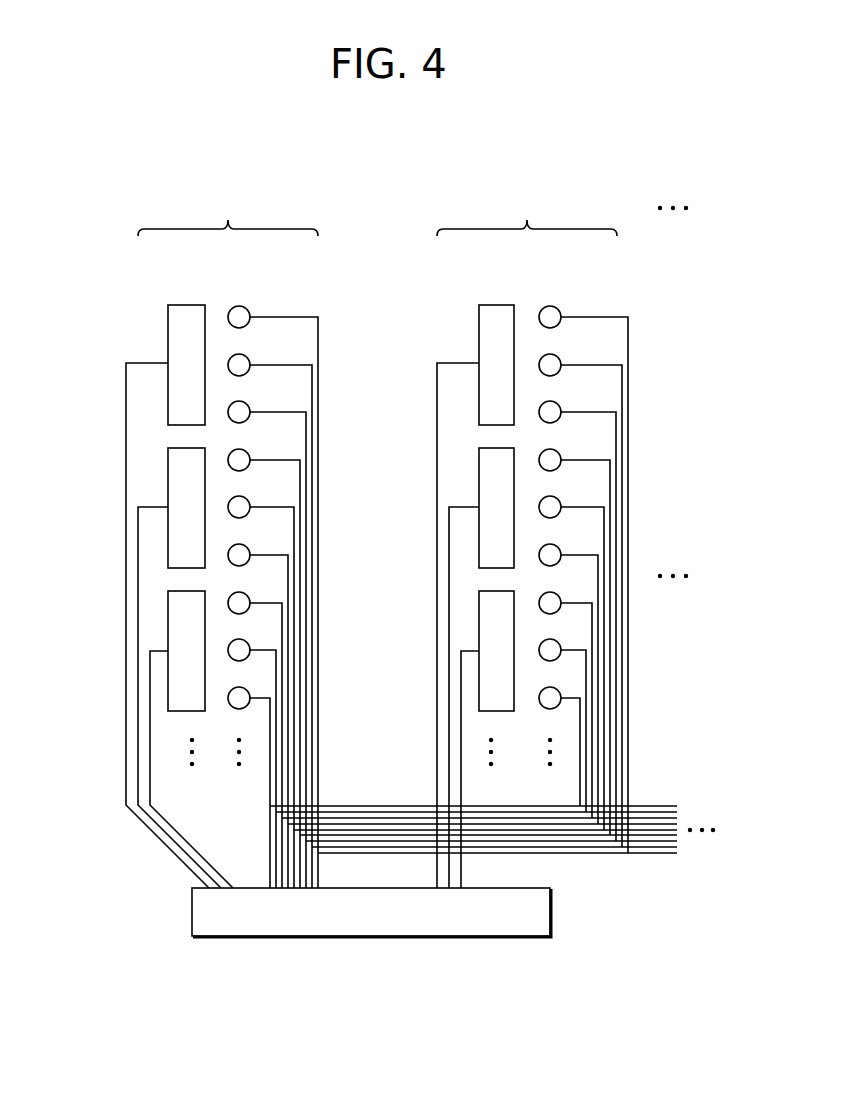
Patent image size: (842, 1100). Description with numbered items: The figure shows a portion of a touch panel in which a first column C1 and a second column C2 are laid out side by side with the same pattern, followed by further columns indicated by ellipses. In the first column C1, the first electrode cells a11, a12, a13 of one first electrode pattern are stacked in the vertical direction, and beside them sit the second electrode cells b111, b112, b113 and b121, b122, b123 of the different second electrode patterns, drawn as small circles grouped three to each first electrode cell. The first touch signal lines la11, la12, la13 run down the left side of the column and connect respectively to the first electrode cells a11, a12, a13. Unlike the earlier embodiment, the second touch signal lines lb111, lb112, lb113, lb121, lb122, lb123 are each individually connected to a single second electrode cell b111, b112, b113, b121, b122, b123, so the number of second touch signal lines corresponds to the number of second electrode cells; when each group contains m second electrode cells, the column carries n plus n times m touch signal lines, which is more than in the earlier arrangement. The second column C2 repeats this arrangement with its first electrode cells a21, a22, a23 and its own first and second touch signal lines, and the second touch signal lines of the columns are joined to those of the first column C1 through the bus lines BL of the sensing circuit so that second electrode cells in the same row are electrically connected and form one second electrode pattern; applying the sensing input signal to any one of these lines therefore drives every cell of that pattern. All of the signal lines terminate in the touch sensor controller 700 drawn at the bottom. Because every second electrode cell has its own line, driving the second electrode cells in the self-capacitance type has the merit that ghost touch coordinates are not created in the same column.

The first column C1 is at (228, 212).
The second column C2 is at (527, 212).
The first electrode cell a11 is at (186, 365).
The first electrode cell a12 is at (186, 508).
The first electrode cell a13 is at (186, 651).
The first electrode cell a21 is at (496, 365).
The first electrode cell a22 is at (496, 508).
The first electrode cell a23 is at (496, 651).
The second electrode cell b111 is at (250, 312).
The second electrode cell b112 is at (250, 358).
The second electrode cell b113 is at (250, 405).
The second electrode cell b121 is at (228, 460).
The second electrode cell b122 is at (228, 508).
The second electrode cell b123 is at (228, 556).
The first touch signal line la11 is at (126, 393).
The first touch signal line la12 is at (138, 597).
The first touch signal line la13 is at (150, 682).
The second touch signal line lb111 is at (318, 430).
The second touch signal line lb112 is at (312, 470).
The second touch signal line lb113 is at (306, 510).
The second touch signal line lb121 is at (300, 548).
The second touch signal line lb122 is at (294, 588).
The second touch signal line lb123 is at (288, 628).
The bus lines BL is at (720, 805).
The touch sensor controller 700 is at (551, 918).